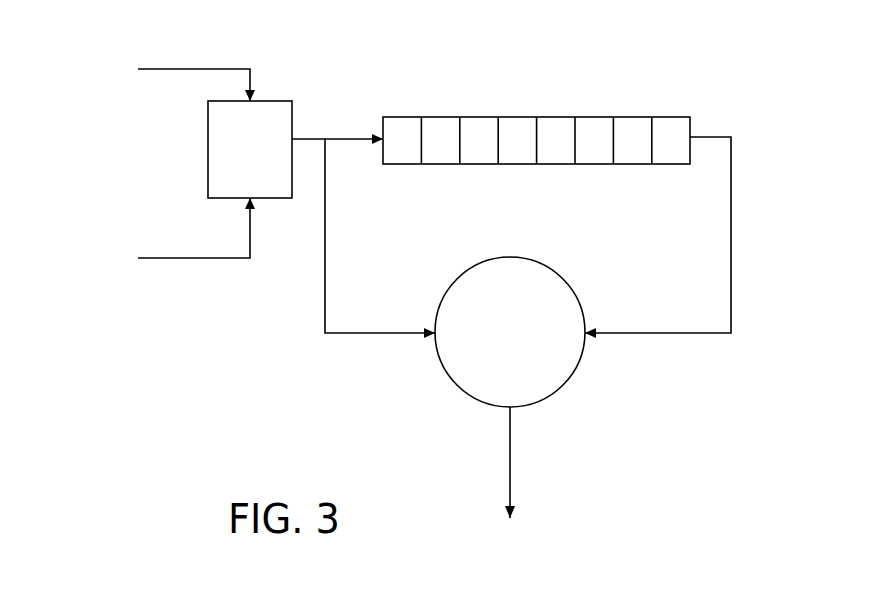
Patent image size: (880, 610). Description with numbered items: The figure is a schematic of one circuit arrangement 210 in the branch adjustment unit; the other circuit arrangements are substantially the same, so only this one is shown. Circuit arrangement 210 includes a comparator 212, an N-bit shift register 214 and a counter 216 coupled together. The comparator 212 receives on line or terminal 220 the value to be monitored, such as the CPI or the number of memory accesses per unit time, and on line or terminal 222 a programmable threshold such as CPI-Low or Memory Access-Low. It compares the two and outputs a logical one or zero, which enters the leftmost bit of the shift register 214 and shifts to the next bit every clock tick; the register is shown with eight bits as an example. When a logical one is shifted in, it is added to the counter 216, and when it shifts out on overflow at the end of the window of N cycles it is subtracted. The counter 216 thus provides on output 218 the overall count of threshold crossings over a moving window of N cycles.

The circuit arrangement 210 is at (400, 275).
The comparator 212 is at (208, 178).
The N-bit shift register 214 is at (537, 170).
The counter 216 is at (560, 391).
The output 218 is at (510, 471).
The line or terminal 220 is at (217, 69).
The line or terminal 222 is at (217, 258).